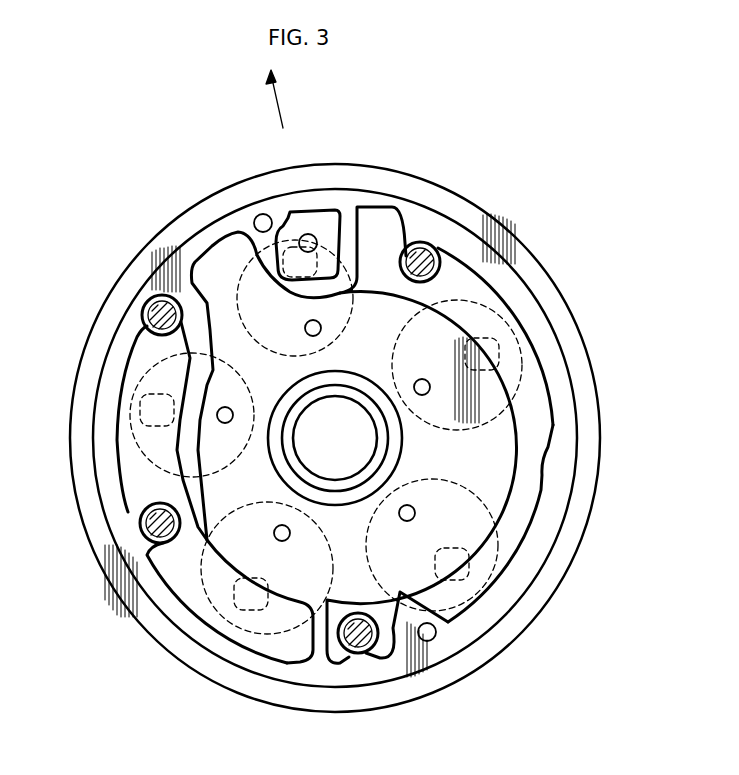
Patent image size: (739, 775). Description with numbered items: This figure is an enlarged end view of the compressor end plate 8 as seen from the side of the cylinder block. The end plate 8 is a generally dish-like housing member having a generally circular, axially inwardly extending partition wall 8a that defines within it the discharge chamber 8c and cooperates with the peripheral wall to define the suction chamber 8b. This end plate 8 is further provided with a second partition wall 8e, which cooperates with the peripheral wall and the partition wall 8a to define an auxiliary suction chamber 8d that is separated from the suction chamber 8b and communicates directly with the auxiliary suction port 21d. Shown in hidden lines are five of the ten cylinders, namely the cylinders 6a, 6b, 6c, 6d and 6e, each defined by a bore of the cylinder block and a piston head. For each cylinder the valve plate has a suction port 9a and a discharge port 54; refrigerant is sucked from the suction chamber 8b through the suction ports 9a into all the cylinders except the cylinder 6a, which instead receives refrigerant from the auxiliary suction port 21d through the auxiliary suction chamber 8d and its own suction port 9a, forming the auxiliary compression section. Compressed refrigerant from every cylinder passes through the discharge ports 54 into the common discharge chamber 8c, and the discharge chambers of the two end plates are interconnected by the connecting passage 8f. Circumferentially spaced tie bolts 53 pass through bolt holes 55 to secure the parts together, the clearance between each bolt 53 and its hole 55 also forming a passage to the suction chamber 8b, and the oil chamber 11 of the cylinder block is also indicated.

The end plate 8 is at (337, 700).
The partition wall 8a is at (517, 548).
The suction chamber 8b is at (548, 390).
The discharge chamber 8c is at (203, 488).
The auxiliary suction chamber 8d is at (260, 213).
The second partition wall 8e is at (412, 220).
The connecting passage 8f is at (192, 258).
The auxiliary suction port 21d is at (300, 208).
The cylinder 6a is at (310, 236).
The cylinder 6b is at (507, 327).
The cylinder 6c is at (500, 530).
The cylinder 6d is at (217, 613).
The cylinder 6e is at (131, 436).
The suction port 9a is at (318, 270).
The discharge port 54 is at (200, 268).
The tie bolt 53 is at (368, 650).
The bolt hole 55 is at (412, 650).
The oil chamber 11 is at (337, 661).